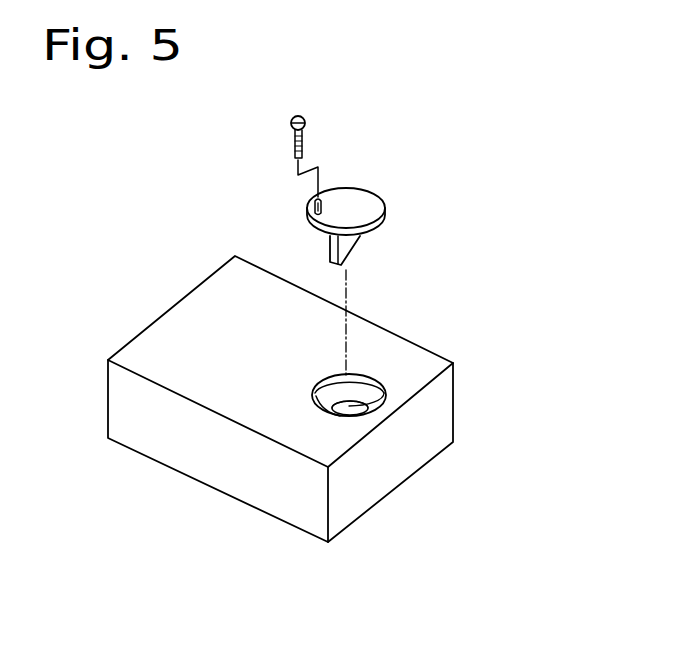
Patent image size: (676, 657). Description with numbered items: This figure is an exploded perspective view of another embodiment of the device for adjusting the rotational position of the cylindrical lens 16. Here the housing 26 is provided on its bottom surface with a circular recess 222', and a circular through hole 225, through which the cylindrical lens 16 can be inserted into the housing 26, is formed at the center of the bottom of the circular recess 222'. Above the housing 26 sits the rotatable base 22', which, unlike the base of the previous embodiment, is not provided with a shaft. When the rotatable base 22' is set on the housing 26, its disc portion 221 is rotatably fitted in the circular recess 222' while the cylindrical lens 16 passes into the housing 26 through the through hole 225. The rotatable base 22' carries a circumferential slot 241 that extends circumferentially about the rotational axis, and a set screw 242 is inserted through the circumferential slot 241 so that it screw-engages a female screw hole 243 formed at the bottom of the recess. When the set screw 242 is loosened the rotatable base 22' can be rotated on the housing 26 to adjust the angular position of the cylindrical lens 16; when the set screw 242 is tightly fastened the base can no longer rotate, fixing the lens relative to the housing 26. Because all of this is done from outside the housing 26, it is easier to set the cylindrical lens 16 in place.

The housing 26 is at (143, 340).
The circular through hole 225 is at (318, 392).
The circular recess 222' is at (437, 451).
The female screw hole 243 is at (318, 412).
The rotatable base 22' is at (388, 185).
The cylindrical lens 16 is at (353, 253).
The disc portion 221 is at (310, 210).
The set screw 242 is at (305, 121).
The circumferential slot 241 is at (313, 197).